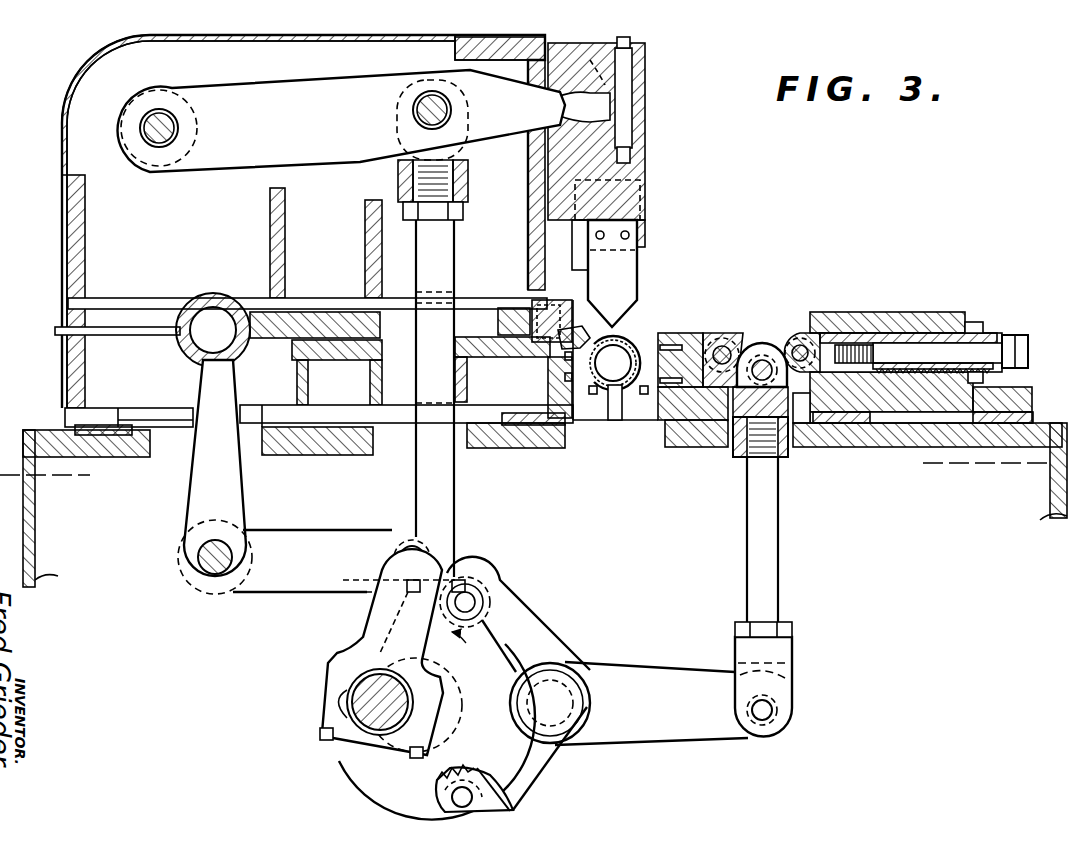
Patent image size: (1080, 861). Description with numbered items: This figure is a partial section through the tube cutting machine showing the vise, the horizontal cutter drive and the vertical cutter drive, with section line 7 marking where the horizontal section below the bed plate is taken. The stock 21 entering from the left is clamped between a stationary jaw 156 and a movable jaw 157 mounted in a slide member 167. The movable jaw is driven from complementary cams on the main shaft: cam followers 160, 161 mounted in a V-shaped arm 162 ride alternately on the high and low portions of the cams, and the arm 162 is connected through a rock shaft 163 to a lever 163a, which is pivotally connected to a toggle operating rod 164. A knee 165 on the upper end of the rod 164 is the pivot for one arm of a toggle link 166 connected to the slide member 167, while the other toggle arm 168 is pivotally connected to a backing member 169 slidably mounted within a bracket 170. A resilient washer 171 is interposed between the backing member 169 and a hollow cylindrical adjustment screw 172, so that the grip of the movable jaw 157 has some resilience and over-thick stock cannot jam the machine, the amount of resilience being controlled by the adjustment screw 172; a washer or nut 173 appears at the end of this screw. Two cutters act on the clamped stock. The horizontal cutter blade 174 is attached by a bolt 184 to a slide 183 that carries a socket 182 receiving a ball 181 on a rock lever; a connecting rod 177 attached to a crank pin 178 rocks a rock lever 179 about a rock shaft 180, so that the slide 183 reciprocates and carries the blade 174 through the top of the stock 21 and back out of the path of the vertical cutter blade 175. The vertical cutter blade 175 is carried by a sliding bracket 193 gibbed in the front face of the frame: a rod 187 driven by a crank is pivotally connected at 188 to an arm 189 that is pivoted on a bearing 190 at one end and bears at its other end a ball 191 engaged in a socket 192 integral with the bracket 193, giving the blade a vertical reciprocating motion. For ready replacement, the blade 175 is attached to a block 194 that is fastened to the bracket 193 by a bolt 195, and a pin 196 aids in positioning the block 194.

The section line 7— 7 is at (1070, 495).
The stock piece 21 is at (613, 420).
The stationary block or jaw 156 is at (620, 345).
The movable block or jaw 157 is at (670, 340).
The cam follower 160 is at (435, 800).
The cam follower 161 is at (490, 585).
The V-shaped arm 162 is at (520, 632).
The rock shaft 163 is at (565, 745).
The lever 163a is at (620, 668).
The toggle operating rod 164 is at (770, 545).
The knee 165 is at (762, 355).
The toggle link 166 is at (752, 340).
The slide member 167 is at (710, 330).
The toggle link arm 168 is at (797, 340).
The backing member 169 is at (848, 352).
The bracket 170 is at (945, 312).
The washer 171 is at (890, 345).
The hollow cylindrical adjustment screw 172 is at (990, 335).
The washer 173 is at (990, 376).
The horizontal cutter blade 174 is at (575, 335).
The vertical cutter blade 175 is at (630, 287).
The connecting rod 177 is at (360, 650).
The crank pin 178 is at (360, 712).
The rock lever 179 is at (352, 520).
The rock shaft 180 is at (200, 563).
The ball 181 is at (205, 310).
The socket 182 is at (213, 300).
The slide 183 is at (330, 312).
The bolt 184 is at (545, 300).
The rod 187 is at (455, 505).
The pivot connection 188 is at (432, 100).
The arm 189 is at (288, 90).
The bearing 190 is at (160, 115).
The ball 191 is at (572, 82).
The socket 192 is at (605, 75).
The sliding bracket 193 is at (648, 128).
The block 194 is at (640, 162).
The bolt 195 is at (640, 182).
The pin 196 is at (632, 43).